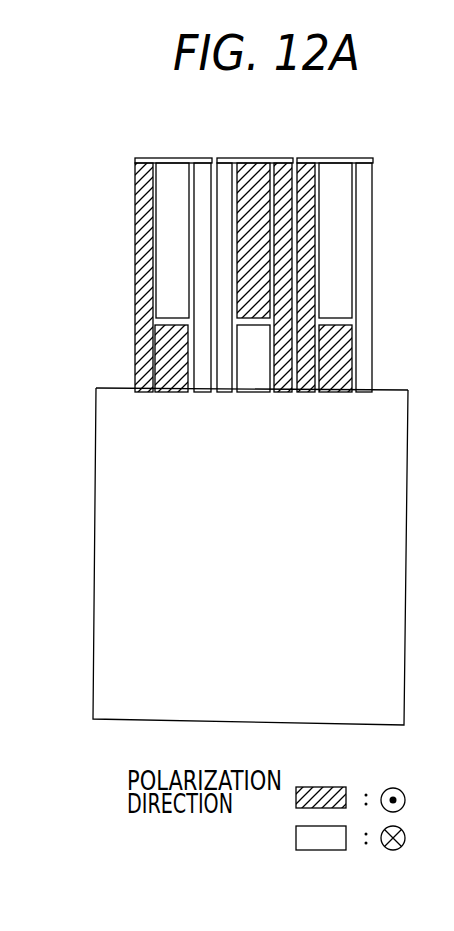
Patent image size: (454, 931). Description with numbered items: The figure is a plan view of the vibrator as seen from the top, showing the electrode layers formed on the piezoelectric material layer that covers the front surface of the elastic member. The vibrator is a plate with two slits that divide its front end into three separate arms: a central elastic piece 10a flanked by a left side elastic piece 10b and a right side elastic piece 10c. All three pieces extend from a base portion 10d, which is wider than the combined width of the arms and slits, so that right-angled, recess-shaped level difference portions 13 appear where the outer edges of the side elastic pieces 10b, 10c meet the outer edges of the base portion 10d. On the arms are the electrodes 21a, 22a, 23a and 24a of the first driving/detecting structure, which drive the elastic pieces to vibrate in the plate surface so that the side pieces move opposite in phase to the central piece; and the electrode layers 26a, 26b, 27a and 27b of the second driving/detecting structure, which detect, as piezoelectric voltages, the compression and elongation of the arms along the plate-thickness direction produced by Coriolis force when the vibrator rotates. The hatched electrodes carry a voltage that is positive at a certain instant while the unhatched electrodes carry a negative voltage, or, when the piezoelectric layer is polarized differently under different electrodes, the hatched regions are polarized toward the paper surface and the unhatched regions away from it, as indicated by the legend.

The central elastic piece 10a is at (253, 158).
The left side elastic piece 10b is at (172, 158).
The right side elastic piece 10c is at (334, 158).
The base portion 10d is at (108, 602).
The level difference portion 13 is at (125, 378).
The electrode 21a is at (140, 238).
The electrode 22a is at (202, 292).
The electrode 23a is at (284, 386).
The electrode 24a is at (213, 386).
The electrode layer 26a is at (157, 194).
The electrode layer 26b is at (158, 350).
The electrode layer 27a is at (252, 313).
The electrode layer 27b is at (257, 387).